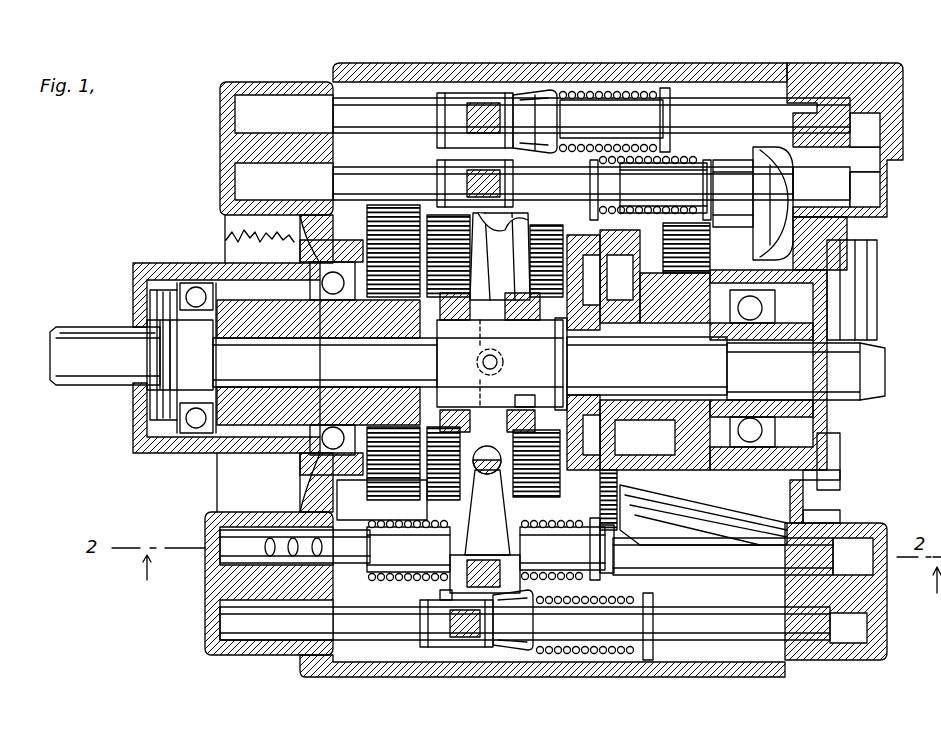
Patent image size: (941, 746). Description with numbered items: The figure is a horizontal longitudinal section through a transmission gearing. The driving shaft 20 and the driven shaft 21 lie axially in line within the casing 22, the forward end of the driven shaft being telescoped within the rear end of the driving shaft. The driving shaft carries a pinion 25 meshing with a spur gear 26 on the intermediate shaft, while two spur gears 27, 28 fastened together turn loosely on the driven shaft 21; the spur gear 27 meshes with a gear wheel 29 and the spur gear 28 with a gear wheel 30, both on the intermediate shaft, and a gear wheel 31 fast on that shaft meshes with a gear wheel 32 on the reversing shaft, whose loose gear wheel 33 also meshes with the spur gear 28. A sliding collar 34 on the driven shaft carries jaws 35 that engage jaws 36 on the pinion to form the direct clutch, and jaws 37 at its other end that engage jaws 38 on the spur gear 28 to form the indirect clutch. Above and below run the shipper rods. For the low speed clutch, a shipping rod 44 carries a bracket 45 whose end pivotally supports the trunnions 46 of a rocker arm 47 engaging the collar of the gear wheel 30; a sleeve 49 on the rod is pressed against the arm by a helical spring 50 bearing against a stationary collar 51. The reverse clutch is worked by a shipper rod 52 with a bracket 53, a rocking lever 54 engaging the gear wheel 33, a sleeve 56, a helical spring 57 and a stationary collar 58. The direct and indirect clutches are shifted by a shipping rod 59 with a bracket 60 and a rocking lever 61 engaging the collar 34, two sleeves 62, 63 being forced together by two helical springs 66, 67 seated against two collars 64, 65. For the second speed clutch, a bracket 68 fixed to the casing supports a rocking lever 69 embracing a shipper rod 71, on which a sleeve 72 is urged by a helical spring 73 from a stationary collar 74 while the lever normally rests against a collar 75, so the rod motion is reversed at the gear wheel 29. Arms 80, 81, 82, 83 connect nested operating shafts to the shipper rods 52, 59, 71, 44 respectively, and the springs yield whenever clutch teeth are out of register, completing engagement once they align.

The driving shaft 20 is at (105, 356).
The driven shaft 21 is at (806, 371).
The casing 22 is at (833, 497).
The pinion 25 is at (377, 427).
The spur gear 26 is at (390, 215).
The spur gear 27 is at (677, 487).
The spur gear 28 is at (627, 480).
The gear wheel 29 is at (683, 233).
The gear wheel 30 is at (547, 227).
The gear wheel 31 is at (460, 260).
The gear wheel 32 is at (393, 493).
The gear wheel 33 is at (543, 463).
The collar 34 is at (487, 307).
The teeth or jaws 35 is at (448, 310).
The jaws or teeth 36 is at (423, 417).
The jaws or teeth 37 is at (530, 413).
The teeth or jaws 38 is at (557, 307).
The shipping rod 44 is at (388, 110).
The bracket 45 is at (462, 100).
The trunnions 46 is at (510, 220).
The rocker arm 47 is at (540, 98).
The sleeve 49 is at (611, 119).
The helical spring 50 is at (613, 93).
The stationary collar 51 is at (667, 93).
The shipper rod 52 is at (367, 633).
The bracket 53 is at (467, 640).
The rocking lever 54 is at (513, 640).
The sleeve 56 is at (593, 657).
The helical spring 57 is at (570, 653).
The stationary collar 58 is at (667, 590).
The shipping rod 59 is at (707, 567).
The bracket 60 is at (507, 563).
The rocking lever 61 is at (478, 472).
The sleeve 62 is at (408, 549).
The sleeve 63 is at (562, 548).
The collar 64 is at (363, 577).
The collar 65 is at (603, 570).
The helical spring 66 is at (428, 580).
The helical spring 67 is at (600, 580).
The bracket 68 is at (767, 153).
The rocking lever 69 is at (723, 210).
The shipper rod 71 is at (337, 177).
The sleeve 72 is at (663, 188).
The helical spring 73 is at (677, 163).
The stationary collar 74 is at (593, 177).
The collar 75 is at (750, 153).
The arm 80 is at (453, 630).
The arm 81 is at (467, 587).
The arm 82 is at (467, 170).
The arm 83 is at (487, 97).